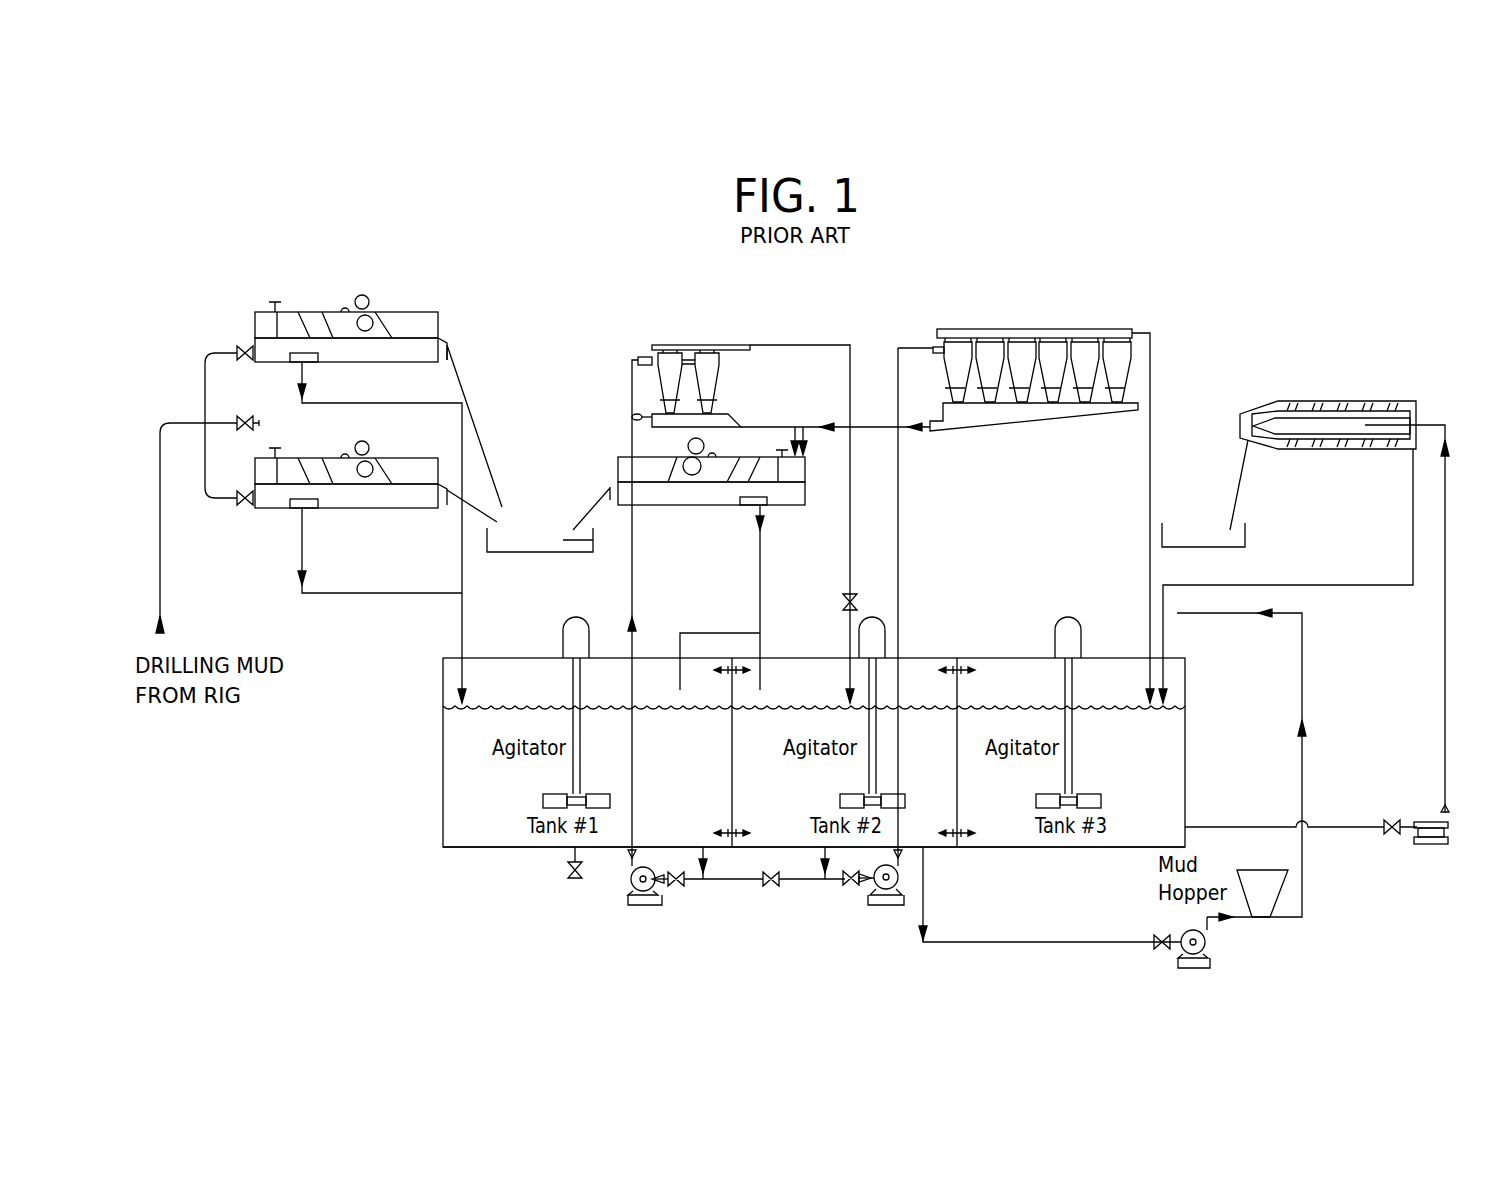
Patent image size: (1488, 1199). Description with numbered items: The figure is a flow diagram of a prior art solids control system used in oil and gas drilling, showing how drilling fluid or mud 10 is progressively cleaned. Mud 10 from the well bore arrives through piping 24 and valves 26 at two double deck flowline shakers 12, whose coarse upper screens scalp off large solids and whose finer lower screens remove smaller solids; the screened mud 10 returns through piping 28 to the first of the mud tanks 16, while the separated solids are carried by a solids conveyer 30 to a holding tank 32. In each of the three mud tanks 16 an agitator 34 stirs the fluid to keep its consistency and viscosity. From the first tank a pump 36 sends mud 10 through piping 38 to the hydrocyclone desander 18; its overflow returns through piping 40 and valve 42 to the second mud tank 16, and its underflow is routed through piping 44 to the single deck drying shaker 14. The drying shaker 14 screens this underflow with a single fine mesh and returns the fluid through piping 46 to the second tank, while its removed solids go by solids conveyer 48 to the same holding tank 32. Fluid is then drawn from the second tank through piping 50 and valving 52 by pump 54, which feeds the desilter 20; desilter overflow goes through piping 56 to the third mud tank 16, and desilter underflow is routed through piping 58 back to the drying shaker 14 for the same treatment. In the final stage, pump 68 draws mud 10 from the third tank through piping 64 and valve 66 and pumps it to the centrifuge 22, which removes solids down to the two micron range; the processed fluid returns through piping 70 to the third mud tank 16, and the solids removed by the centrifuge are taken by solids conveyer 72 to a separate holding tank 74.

The drilling fluid or mud 10 is at (443, 775).
The double deck flowline shakers 12 is at (395, 312).
The single deck drying shaker 14 is at (620, 457).
The mud tanks 16 is at (470, 848).
The desander 18 is at (680, 345).
The desilter 20 is at (998, 329).
The centrifuge 22 is at (1290, 402).
The piping 24 is at (205, 392).
The valves 26 is at (238, 346).
The piping 28 is at (462, 592).
The solids conveyer 30 is at (488, 470).
The holding tank 32 is at (597, 543).
The agitator 34 is at (564, 614).
The pump 36 is at (640, 906).
The piping 38 is at (630, 600).
The piping 40 is at (850, 516).
The valve 42 is at (841, 607).
The piping 44 is at (750, 425).
The piping 46 is at (761, 555).
The solids conveyer 48 is at (594, 504).
The piping 50 is at (825, 882).
The valving 52 is at (772, 888).
The pump 54 is at (884, 906).
The piping 56 is at (1150, 406).
The piping 58 is at (875, 424).
The piping 64 is at (1445, 746).
The valve 66 is at (1398, 820).
The pump 68 is at (1430, 846).
The piping 70 is at (1413, 500).
The solids conveyer 72 is at (1237, 476).
The holding tank 74 is at (1232, 537).